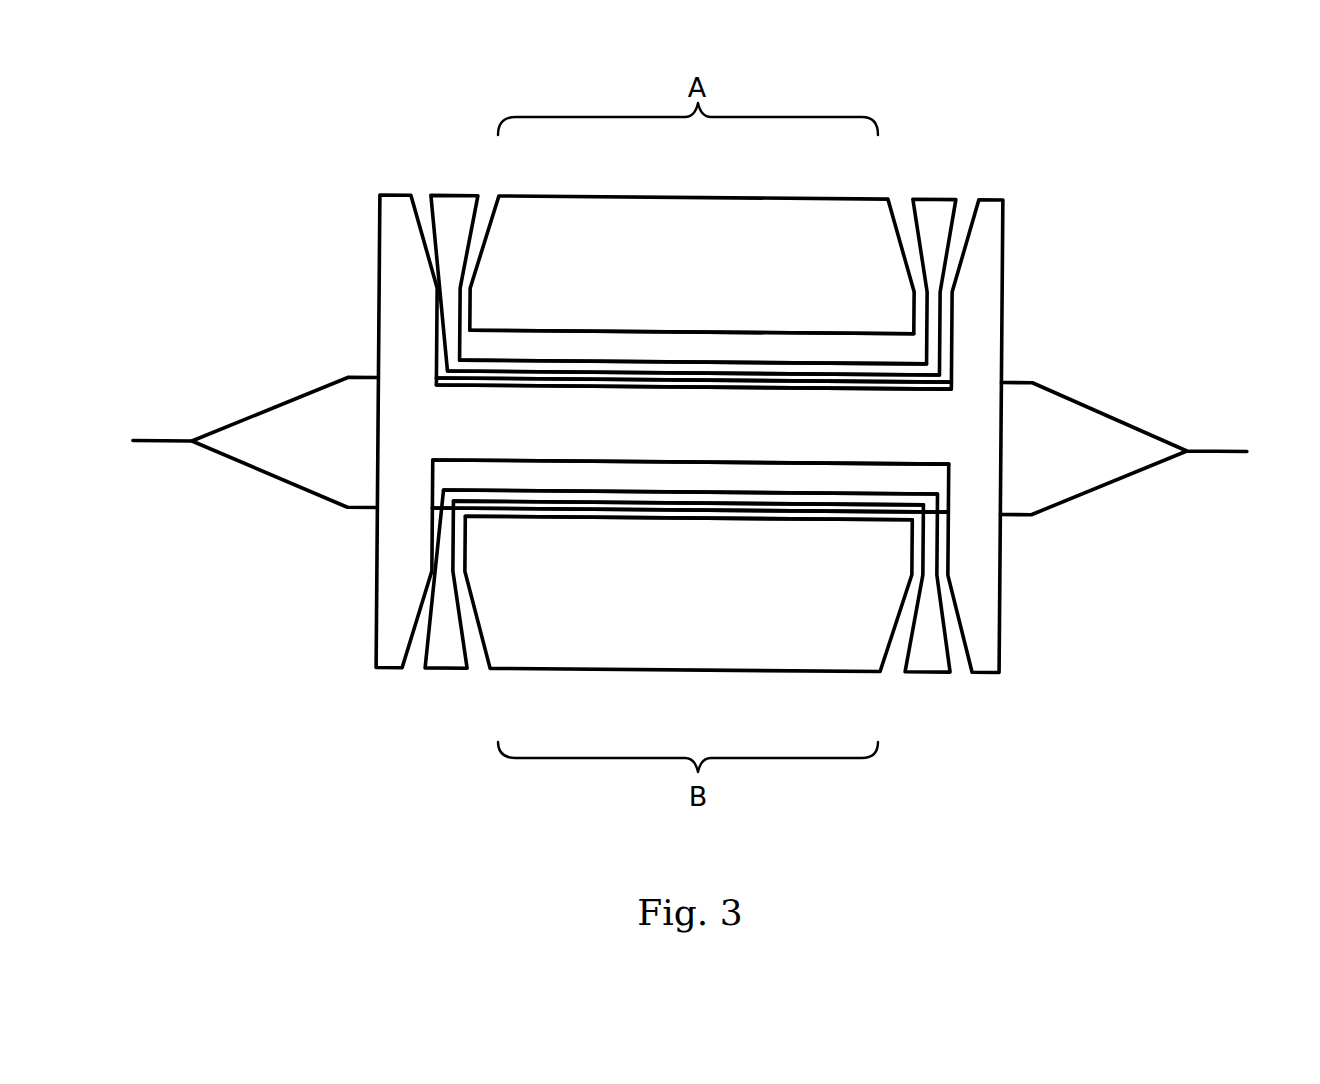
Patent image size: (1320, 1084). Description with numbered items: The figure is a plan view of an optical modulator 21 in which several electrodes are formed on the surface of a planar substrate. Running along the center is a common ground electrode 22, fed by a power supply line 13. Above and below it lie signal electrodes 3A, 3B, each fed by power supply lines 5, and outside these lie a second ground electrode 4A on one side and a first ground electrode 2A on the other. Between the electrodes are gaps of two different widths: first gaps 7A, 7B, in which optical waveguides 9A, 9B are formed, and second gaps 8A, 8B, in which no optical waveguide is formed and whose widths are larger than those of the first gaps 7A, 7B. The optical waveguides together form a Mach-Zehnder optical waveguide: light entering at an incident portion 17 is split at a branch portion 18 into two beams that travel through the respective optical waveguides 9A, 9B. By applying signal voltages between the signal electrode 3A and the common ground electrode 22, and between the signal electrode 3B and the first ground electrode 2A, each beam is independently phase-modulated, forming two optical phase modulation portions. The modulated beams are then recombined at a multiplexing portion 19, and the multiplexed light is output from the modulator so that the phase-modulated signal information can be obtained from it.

The first ground electrode 2A is at (737, 655).
The signal electrode 3A is at (690, 360).
The signal electrode 3B is at (632, 494).
The second ground electrode 4A is at (737, 210).
The power supply line 5 is at (447, 203).
The first gap 7A is at (835, 373).
The first gap 7B is at (815, 512).
The second gap 8A is at (758, 330).
The second gap 8B is at (687, 492).
The optical waveguide 9A is at (610, 378).
The optical waveguide 9B is at (600, 512).
The power supply line 13 is at (388, 200).
The incident portion 17 is at (163, 440).
The branch portion 18 is at (270, 402).
The multiplexing portion 19 is at (1217, 450).
The optical modulator 21 is at (1024, 194).
The common ground electrode 22 is at (728, 436).